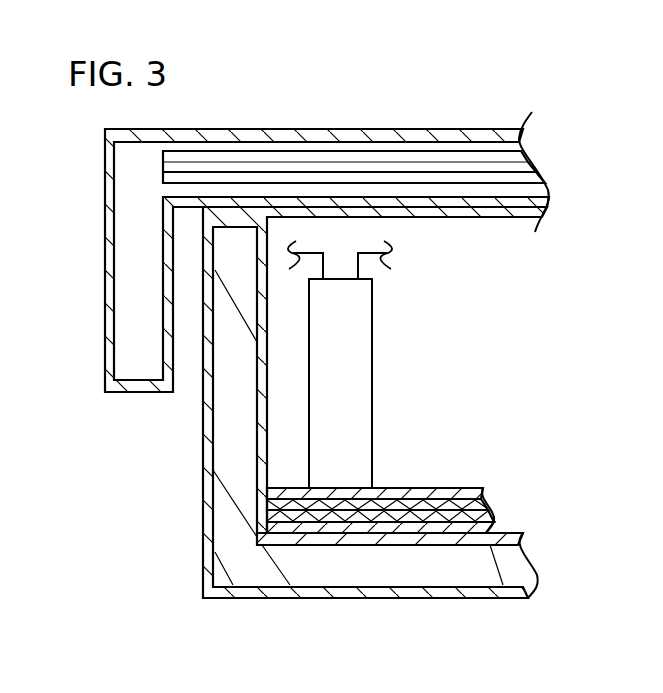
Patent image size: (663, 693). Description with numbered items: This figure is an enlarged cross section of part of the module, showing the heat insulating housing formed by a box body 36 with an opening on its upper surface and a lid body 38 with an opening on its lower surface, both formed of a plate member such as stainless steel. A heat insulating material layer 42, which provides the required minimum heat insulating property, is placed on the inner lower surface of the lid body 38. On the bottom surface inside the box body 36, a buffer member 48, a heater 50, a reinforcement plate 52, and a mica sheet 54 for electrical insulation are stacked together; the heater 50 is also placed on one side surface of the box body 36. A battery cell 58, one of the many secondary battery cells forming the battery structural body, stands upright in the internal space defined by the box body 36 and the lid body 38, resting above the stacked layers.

The box body 36 is at (409, 599).
The lid body 38 is at (110, 283).
The heat insulating material layer 42 is at (438, 213).
The buffer member 48 is at (257, 541).
The heater 50 is at (267, 520).
The reinforcement plate 52 is at (267, 507).
The mica sheet 54 is at (267, 493).
The battery cell 58 is at (360, 362).